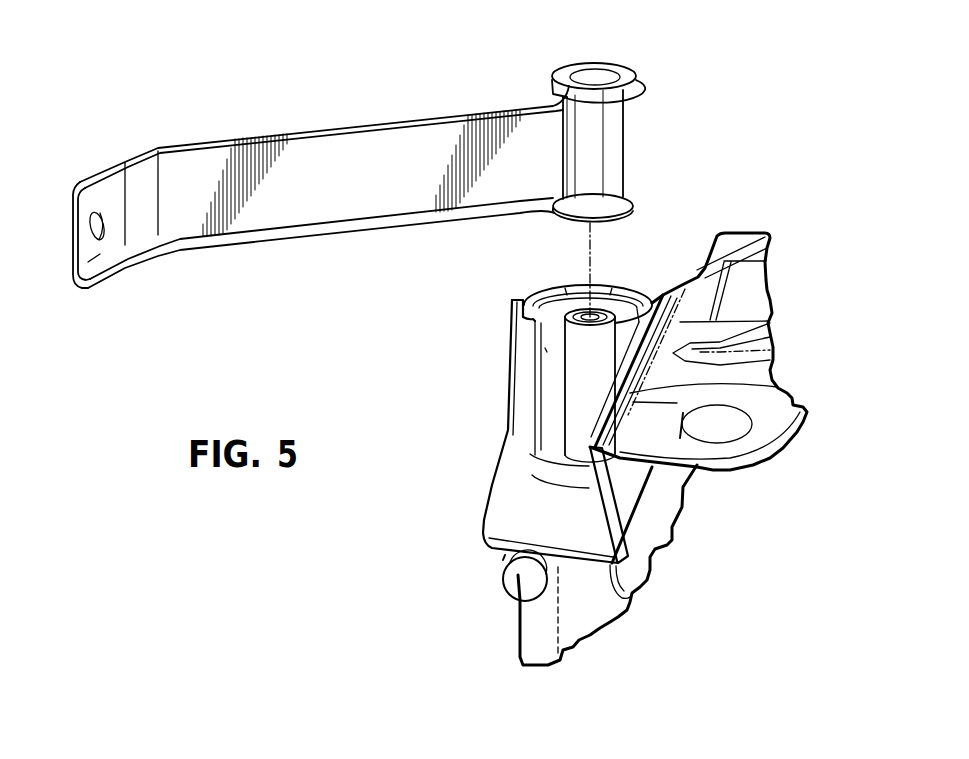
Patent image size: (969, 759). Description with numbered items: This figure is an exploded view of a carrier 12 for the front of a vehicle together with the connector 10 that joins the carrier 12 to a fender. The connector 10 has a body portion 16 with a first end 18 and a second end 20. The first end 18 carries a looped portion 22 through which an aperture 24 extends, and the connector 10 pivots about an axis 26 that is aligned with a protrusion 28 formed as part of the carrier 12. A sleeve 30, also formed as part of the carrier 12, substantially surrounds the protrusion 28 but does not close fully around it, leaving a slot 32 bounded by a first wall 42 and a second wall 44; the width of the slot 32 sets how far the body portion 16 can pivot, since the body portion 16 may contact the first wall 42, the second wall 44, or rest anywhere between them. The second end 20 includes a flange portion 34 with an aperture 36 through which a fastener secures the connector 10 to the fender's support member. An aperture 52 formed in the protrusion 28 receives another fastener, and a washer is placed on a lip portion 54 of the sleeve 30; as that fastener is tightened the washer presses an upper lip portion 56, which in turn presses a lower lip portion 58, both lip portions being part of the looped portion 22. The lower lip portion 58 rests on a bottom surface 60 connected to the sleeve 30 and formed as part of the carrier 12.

The connector 10 is at (180, 120).
The carrier 12 is at (752, 302).
The body portion 16 is at (376, 162).
The first end 18 is at (629, 111).
The second end 20 is at (97, 165).
The looped portion 22 is at (632, 147).
The aperture 24 is at (598, 79).
The axis 26 is at (600, 261).
The protrusion 28 is at (577, 383).
The sleeve 30 is at (547, 348).
The slot 32 is at (528, 365).
The flange portion 34 is at (88, 263).
The aperture 36 is at (104, 226).
The first wall 42 is at (520, 385).
The second wall 44 is at (600, 378).
The aperture 52 is at (607, 312).
The lip portion 54 is at (562, 301).
The upper lip portion 56 is at (572, 66).
The lower lip portion 58 is at (630, 191).
The bottom surface 60 is at (548, 455).